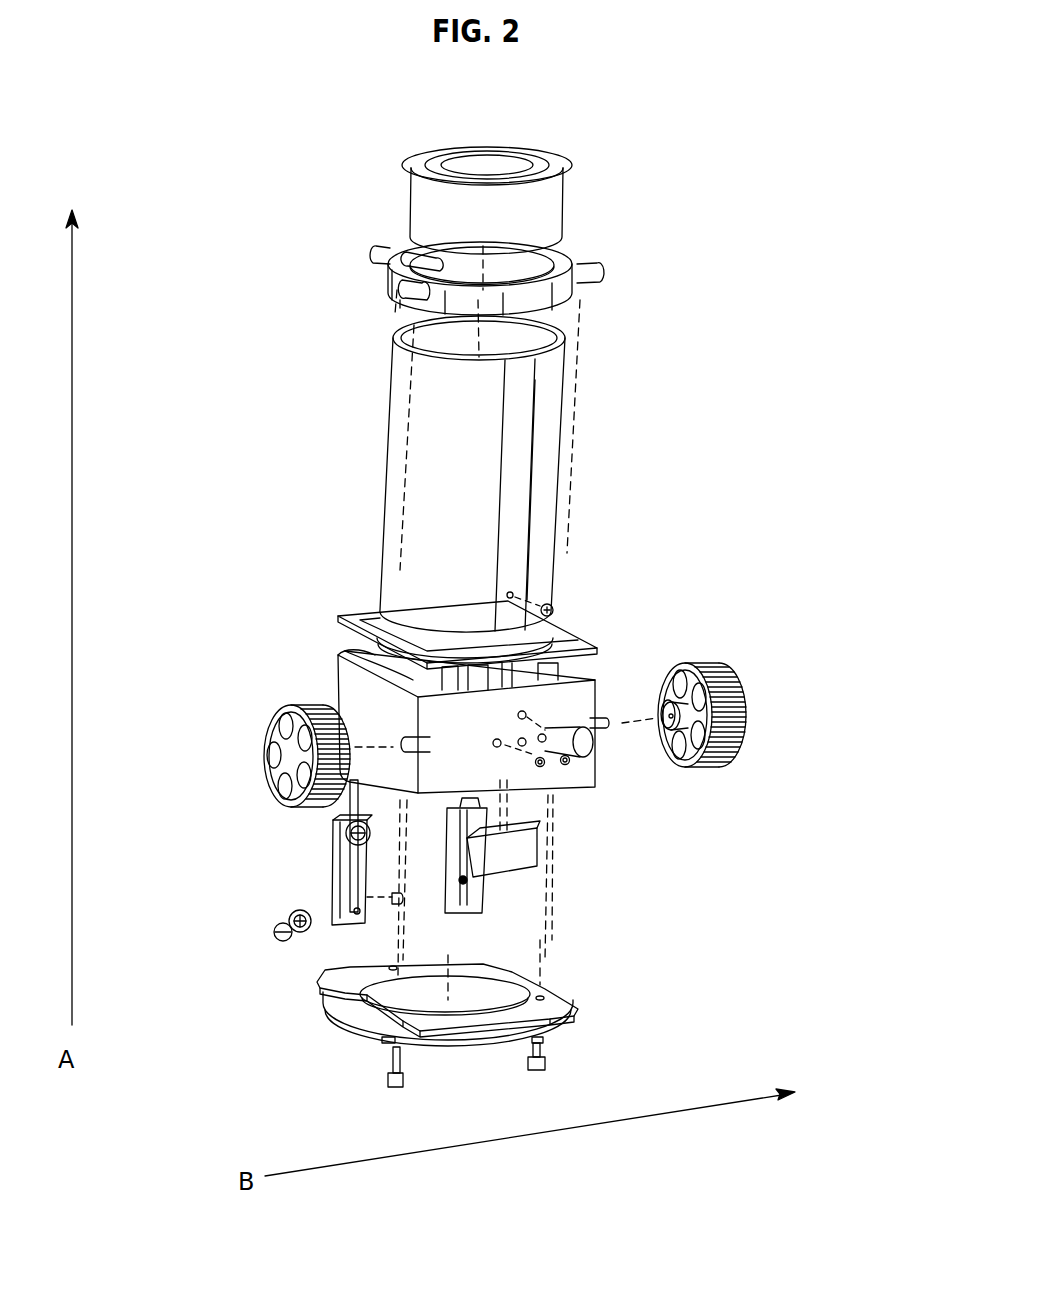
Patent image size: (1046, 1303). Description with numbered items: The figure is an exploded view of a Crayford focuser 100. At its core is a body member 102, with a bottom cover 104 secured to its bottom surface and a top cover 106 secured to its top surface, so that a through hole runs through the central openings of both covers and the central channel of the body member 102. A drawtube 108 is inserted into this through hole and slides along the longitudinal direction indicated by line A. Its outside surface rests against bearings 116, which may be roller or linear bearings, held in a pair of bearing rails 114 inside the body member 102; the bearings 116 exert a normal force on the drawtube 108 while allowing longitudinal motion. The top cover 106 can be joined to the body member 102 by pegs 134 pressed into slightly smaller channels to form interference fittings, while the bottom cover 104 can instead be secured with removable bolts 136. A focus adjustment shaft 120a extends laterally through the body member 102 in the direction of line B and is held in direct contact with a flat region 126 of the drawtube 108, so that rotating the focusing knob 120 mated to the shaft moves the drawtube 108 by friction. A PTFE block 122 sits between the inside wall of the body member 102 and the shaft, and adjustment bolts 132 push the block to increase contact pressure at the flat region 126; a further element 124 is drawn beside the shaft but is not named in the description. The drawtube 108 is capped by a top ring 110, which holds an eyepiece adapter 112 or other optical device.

The Crayford focuser 100 is at (261, 199).
The eyepiece adapter 112 is at (548, 200).
The top ring 110 is at (580, 300).
The flat region 126 is at (517, 452).
The drawtube 108 is at (393, 497).
The top cover 106 is at (350, 618).
The pegs 134 is at (360, 657).
The body member 102 is at (338, 676).
The focus adjustment shaft 120a is at (603, 723).
The focusing knob 120 is at (745, 690).
The pin 124 is at (590, 750).
The adjustment bolts 132 is at (590, 770).
The bearing rails 114 is at (340, 850).
The bearings 116 is at (273, 917).
The PTFE block 122 is at (530, 856).
The bottom cover 104 is at (560, 1002).
The bolts 136 is at (390, 1088).